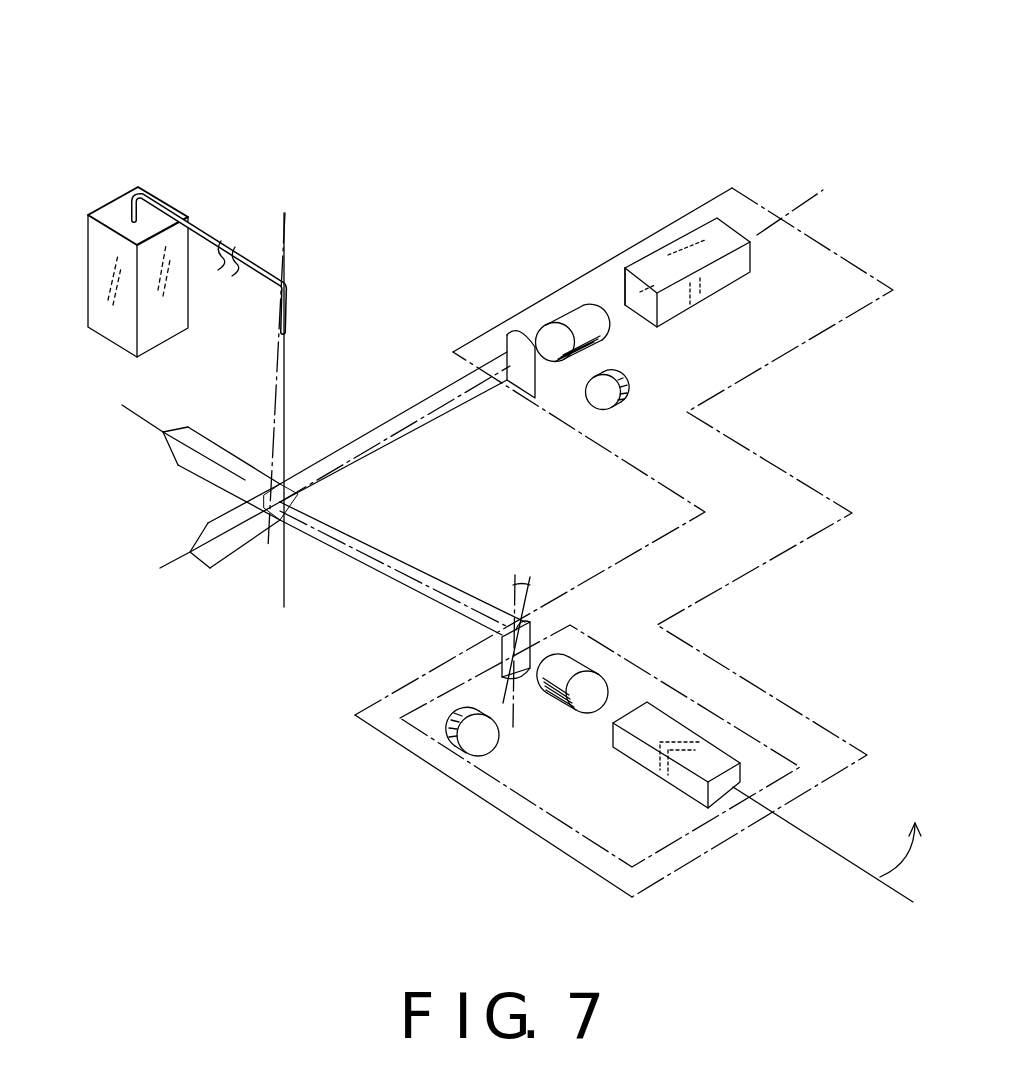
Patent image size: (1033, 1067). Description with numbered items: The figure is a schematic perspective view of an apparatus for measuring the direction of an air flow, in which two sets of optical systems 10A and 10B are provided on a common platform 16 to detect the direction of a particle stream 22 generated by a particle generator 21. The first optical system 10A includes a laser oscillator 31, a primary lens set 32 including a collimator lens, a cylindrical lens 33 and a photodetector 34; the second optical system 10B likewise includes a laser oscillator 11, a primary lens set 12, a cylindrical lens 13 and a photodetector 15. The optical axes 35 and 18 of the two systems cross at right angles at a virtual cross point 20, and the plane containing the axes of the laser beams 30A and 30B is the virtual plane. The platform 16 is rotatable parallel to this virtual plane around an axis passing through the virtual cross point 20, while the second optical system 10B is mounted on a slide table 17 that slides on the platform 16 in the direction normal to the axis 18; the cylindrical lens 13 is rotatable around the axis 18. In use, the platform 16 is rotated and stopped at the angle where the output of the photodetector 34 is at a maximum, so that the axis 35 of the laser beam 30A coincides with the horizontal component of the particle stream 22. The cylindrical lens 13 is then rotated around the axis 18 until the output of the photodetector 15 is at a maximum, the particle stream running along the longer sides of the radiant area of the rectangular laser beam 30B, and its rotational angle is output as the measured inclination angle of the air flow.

The first optical system 10A is at (568, 163).
The second optical system 10B is at (800, 647).
The laser oscillator 11 is at (657, 747).
The primary lens set 12 is at (600, 664).
The cylindrical lens 13 is at (532, 622).
The photodetector 15 is at (478, 745).
The platform 16 is at (800, 257).
The slide table 17 is at (593, 813).
The optical axis 18 is at (567, 672).
The virtual cross point 20 is at (270, 497).
The particle generator 21 is at (120, 210).
The particle stream 22 is at (273, 397).
The laser beam 30A is at (233, 547).
The second rectangular laser beam 30B is at (167, 450).
The laser oscillator 31 is at (685, 247).
The primary lens set 32 is at (575, 320).
The cylindrical lens 33 is at (512, 348).
The photodetector 34 is at (623, 383).
The optical axis 35 is at (623, 307).